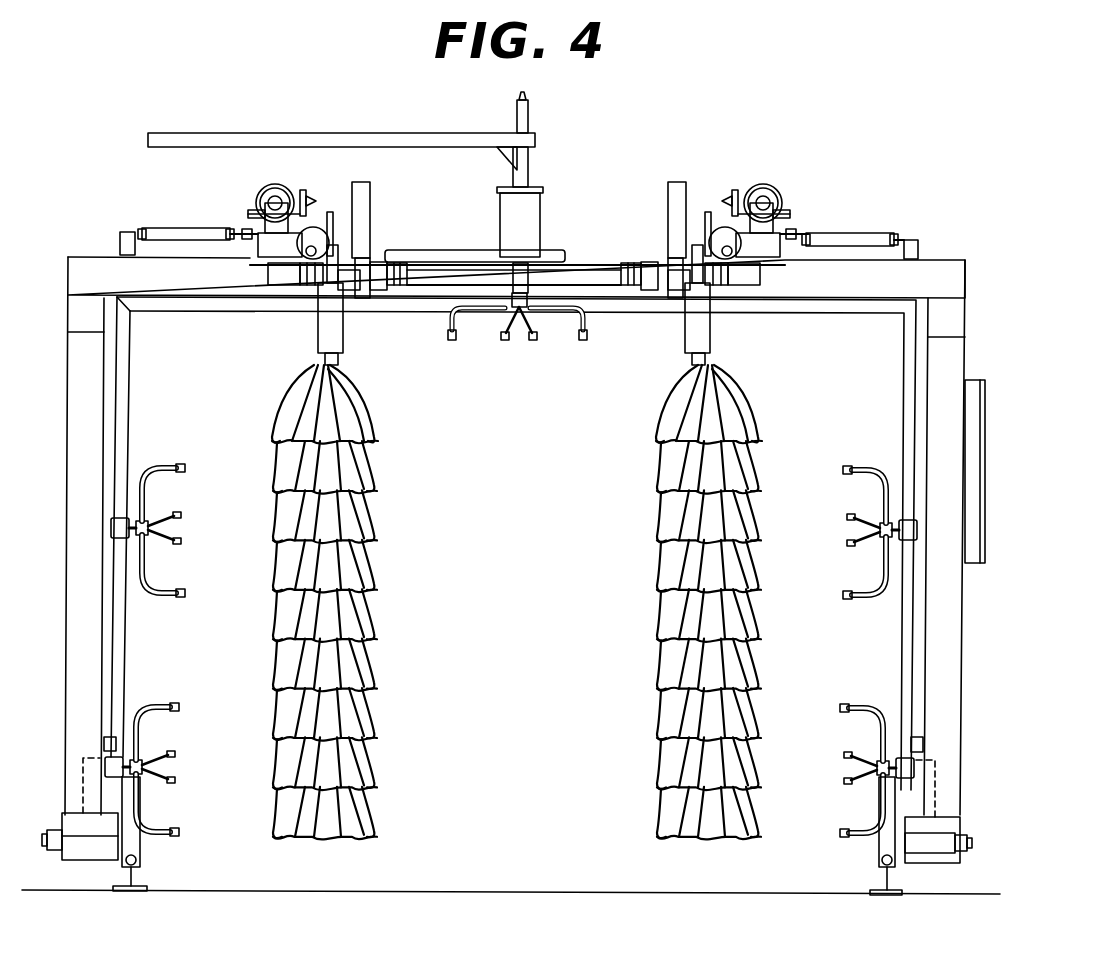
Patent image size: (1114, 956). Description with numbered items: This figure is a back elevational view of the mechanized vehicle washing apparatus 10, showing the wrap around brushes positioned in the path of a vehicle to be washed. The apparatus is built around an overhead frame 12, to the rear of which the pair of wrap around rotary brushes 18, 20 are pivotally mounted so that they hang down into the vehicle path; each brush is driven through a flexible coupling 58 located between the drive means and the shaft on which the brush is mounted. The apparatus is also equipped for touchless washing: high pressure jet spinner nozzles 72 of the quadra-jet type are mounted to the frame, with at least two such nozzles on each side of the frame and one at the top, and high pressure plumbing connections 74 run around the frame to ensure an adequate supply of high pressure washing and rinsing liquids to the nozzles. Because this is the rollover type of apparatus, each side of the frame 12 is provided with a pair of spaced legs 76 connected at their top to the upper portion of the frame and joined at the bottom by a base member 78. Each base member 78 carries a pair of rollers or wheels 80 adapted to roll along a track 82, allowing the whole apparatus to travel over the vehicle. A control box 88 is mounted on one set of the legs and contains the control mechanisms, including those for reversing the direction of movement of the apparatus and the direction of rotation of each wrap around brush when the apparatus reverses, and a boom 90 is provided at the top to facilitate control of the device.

The mechanized vehicle washing apparatus 10 is at (530, 518).
The overhead frame 12 is at (808, 292).
The wrap around rotary brush 18 is at (742, 413).
The wrap around rotary brush 20 is at (374, 408).
The flexible coupling 58 is at (345, 350).
The quadra-jet type jet spinner nozzle 72 is at (570, 320).
The high pressure plumbing connections 74 is at (108, 601).
The legs 76 is at (72, 677).
The base member 78 is at (955, 827).
The rollers or wheels 80 is at (138, 843).
The track 82 is at (135, 878).
The control box 88 is at (986, 461).
The boom 90 is at (252, 131).